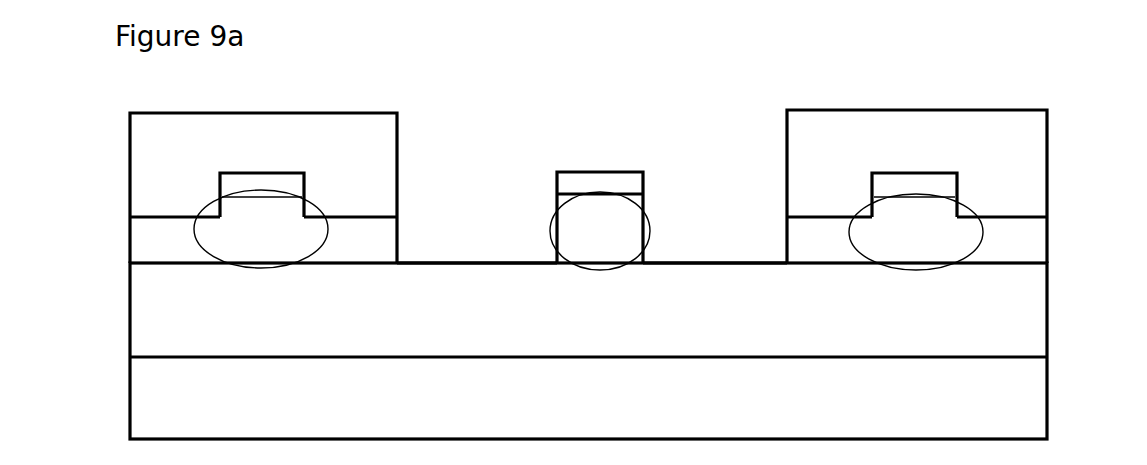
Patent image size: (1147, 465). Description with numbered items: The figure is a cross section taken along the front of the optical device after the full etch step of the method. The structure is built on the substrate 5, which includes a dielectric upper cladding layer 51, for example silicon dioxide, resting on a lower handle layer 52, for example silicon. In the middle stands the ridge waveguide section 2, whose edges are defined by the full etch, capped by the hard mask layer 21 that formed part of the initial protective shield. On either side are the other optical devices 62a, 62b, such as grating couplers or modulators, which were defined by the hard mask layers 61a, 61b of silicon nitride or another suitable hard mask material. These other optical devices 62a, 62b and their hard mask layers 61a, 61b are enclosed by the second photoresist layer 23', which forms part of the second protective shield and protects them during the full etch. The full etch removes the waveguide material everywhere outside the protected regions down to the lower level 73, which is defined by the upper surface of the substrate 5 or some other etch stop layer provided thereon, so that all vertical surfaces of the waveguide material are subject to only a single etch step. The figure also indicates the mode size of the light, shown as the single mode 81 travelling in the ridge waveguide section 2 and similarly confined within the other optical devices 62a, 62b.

The ridge waveguide section 2 is at (632, 223).
The substrate 5 is at (1076, 350).
The hard mask layer 21 is at (612, 182).
The second photoresist layer 23' is at (588, 152).
The dielectric upper cladding layer 51 is at (951, 328).
The lower substrate layer 52 is at (961, 410).
The hard mask layer 61a is at (278, 180).
The hard mask layer 61b is at (917, 178).
The other optical device 62a is at (306, 206).
The other optical device 62b is at (950, 213).
The lower level 73 is at (482, 262).
The single mode 81 is at (552, 220).